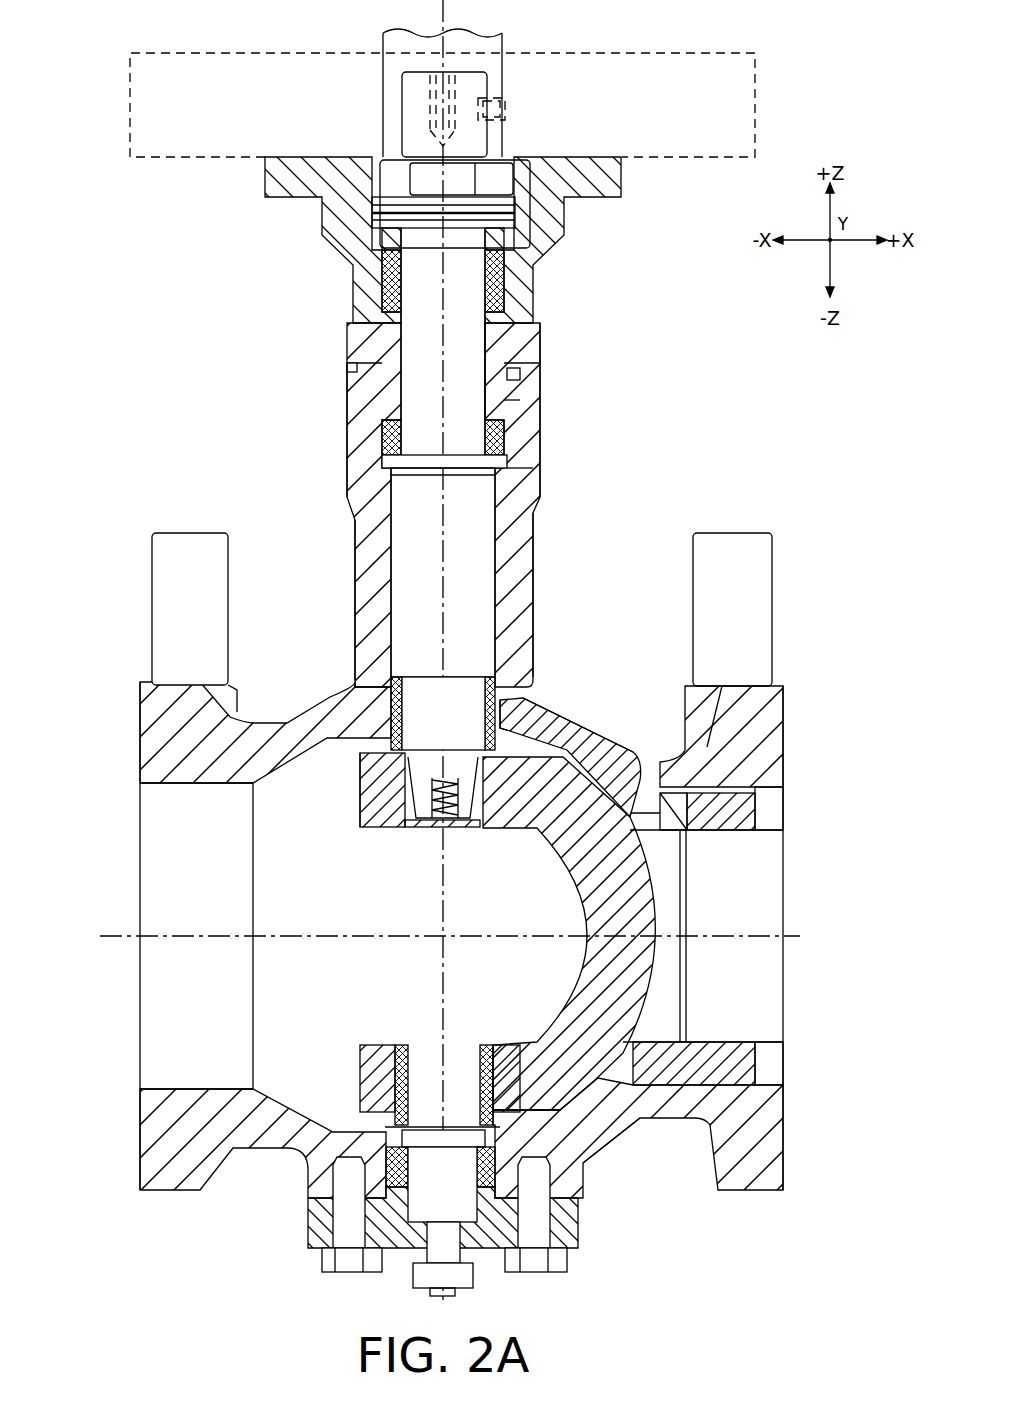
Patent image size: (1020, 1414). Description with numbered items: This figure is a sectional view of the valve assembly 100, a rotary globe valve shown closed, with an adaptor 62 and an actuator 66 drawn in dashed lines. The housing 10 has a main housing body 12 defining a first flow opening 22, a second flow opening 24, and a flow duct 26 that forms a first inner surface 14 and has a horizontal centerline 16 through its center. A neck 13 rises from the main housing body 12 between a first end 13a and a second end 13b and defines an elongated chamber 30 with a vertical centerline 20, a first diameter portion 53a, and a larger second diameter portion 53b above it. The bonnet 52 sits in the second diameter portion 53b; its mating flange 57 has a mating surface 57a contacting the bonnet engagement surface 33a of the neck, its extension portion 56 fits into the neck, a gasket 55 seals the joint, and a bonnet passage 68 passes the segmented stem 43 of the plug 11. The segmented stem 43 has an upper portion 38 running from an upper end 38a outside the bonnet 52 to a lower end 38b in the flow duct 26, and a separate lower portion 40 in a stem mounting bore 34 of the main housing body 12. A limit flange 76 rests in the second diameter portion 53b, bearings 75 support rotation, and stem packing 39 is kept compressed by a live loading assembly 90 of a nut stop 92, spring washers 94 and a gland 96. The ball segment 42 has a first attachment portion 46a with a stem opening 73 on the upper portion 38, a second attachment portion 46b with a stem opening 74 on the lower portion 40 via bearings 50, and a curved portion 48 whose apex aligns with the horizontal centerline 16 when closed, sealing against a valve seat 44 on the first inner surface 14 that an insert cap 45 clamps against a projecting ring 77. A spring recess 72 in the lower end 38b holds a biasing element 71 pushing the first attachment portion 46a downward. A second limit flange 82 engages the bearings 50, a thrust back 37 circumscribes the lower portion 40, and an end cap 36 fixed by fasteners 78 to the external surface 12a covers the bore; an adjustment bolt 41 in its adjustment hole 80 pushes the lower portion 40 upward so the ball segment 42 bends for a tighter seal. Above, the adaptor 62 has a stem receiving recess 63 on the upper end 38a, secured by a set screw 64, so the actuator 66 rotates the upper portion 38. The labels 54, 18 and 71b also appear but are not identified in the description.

The housing 10 is at (108, 647).
The valve assembly 100 is at (106, 106).
The vertical centerline 20 is at (443, 18).
The adaptor 62 is at (518, 53).
The upper end 38a is at (390, 74).
The set screw 64 is at (505, 117).
The actuator 66 is at (700, 52).
The stem receiving recess 63 is at (365, 157).
The mounting flange 54 is at (635, 175).
The gland 96 is at (370, 235).
The nut stop 92 is at (505, 175).
The spring washers 94 is at (368, 217).
The segmented stem 43 is at (390, 325).
The live loading assembly 90 is at (540, 215).
The stem packing 39 is at (530, 255).
The upper portion 38 is at (490, 337).
The bonnet bore 18 is at (380, 570).
The bonnet 52 is at (588, 337).
The mating flange 57 is at (345, 337).
The mating surface 57a is at (347, 372).
The second diameter portion 53b is at (337, 380).
The first diameter portion 53a is at (325, 730).
The bonnet passage 68 is at (520, 345).
The bonnet engagement surface 33a is at (538, 365).
The gasket 55 is at (515, 375).
The extension portion 56 is at (520, 400).
The limit flange 76 is at (520, 455).
The first end 13a is at (600, 400).
The neck 13 is at (640, 522).
The second end 13b is at (600, 660).
The seal 71b is at (540, 690).
The bearings 75 is at (490, 430).
The elongated chamber 30 is at (496, 560).
The first attachment portion 46a is at (358, 800).
The stem opening 73 is at (375, 765).
The lower end 38b is at (408, 822).
The spring recess 72 is at (452, 775).
The biasing element 71 is at (433, 775).
The plug 11 is at (360, 830).
The horizontal centerline 16 is at (360, 935).
The stem opening 74 is at (500, 1065).
The first flow opening 22 is at (155, 785).
The flow duct 26 is at (163, 877).
The first inner surface 14 is at (231, 936).
The second flow opening 24 is at (778, 790).
The curved portion 48 is at (630, 815).
The ball segment 42 is at (665, 882).
The valve seat 44 is at (675, 1040).
The insert cap 45 is at (770, 1065).
The main housing body 12 is at (263, 1178).
The external surface 12a is at (615, 1130).
The projecting ring 77 is at (650, 1115).
The second attachment portion 46b is at (360, 1090).
The bearings 50 is at (400, 1045).
The thrust back 37 is at (495, 1150).
The second limit flange 82 is at (428, 1125).
The stem mounting bore 34 is at (410, 1200).
The end cap 36 is at (520, 1250).
The lower portion 40 is at (465, 1200).
The adjustment hole 80 is at (455, 1250).
The adjustment bolt 41 is at (428, 1285).
The fasteners 78 is at (330, 1270).